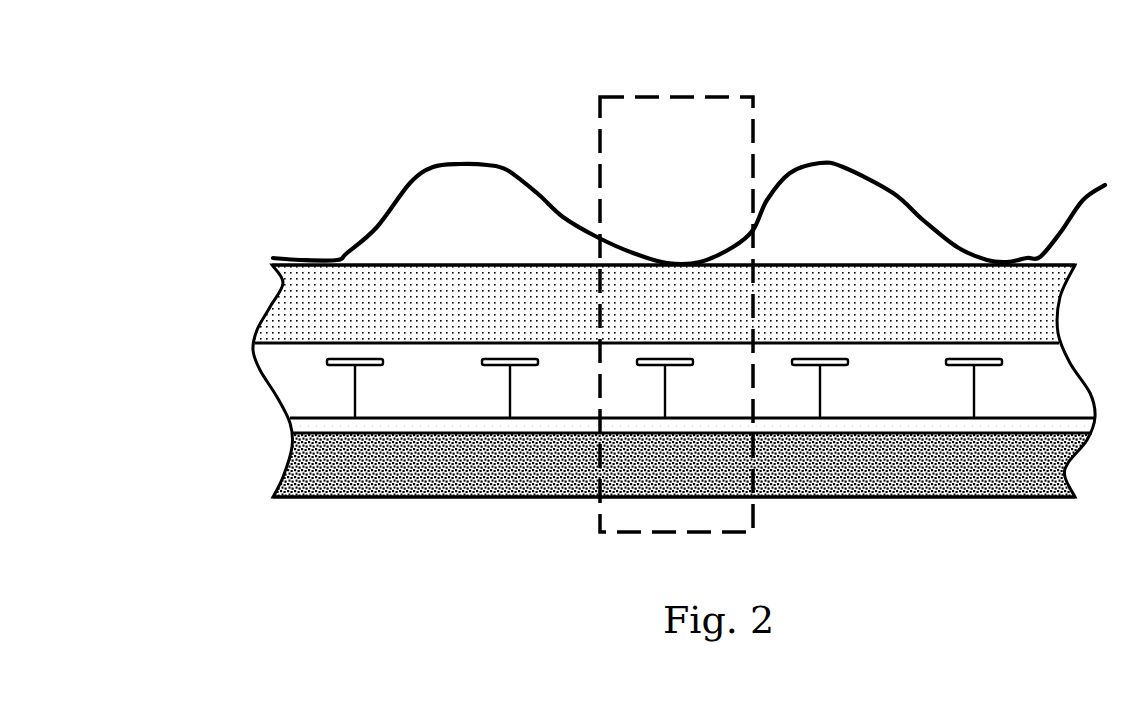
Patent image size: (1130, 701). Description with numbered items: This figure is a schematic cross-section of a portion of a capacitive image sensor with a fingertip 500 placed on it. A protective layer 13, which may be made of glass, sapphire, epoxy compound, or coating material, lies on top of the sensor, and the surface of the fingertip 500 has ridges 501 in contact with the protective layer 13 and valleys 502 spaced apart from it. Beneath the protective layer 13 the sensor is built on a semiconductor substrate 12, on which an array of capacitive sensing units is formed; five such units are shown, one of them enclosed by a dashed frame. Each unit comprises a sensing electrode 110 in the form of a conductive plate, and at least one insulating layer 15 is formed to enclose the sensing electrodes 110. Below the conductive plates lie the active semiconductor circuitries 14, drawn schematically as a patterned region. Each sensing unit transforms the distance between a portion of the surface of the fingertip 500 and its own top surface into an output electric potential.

The semiconductor substrate 12 is at (303, 468).
The protective layer 13 is at (307, 310).
The active semiconductor circuitries 14 is at (310, 425).
The insulating layer 15 is at (297, 378).
The sensing electrode 110 is at (327, 363).
The fingertip 500 is at (397, 132).
The ridges 501 is at (670, 260).
The valleys 502 is at (840, 165).